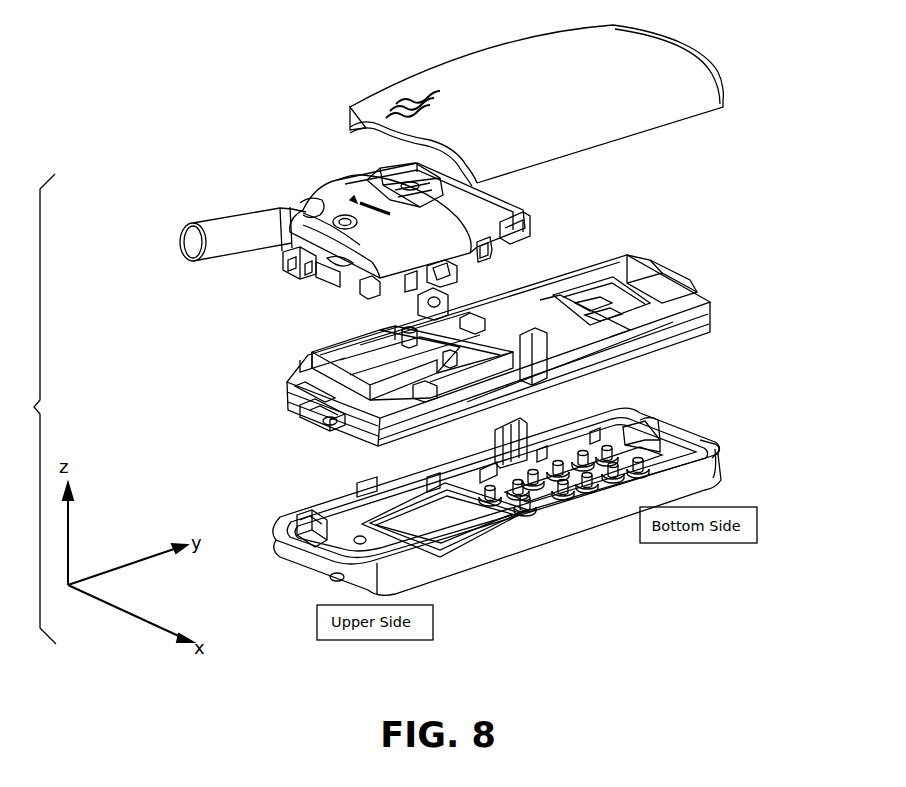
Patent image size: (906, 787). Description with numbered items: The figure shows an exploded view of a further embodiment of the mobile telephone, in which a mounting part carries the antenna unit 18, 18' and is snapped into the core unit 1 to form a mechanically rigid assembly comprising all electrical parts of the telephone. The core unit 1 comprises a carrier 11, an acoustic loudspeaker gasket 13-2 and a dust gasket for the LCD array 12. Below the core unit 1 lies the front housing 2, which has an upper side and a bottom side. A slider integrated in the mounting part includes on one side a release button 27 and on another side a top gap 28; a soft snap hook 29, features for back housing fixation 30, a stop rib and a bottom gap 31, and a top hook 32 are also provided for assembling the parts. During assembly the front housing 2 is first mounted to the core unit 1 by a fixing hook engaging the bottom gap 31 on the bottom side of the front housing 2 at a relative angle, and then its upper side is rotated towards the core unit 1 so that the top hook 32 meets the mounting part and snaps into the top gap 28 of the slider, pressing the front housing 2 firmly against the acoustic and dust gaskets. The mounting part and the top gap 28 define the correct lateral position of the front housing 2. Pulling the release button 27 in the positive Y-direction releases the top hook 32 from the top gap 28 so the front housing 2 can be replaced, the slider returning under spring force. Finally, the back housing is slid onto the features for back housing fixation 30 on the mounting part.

The core unit 1 is at (668, 66).
The front housing 2 is at (570, 527).
The carrier 11 is at (321, 436).
The LCD array 12 is at (313, 436).
The acoustic gasket 13-2 is at (312, 436).
The antenna unit 18 is at (401, 216).
The antenna unit 18' is at (199, 234).
The release button 27 is at (387, 172).
The top gap 28 is at (310, 274).
The soft snap hook 29 is at (490, 255).
The features for back housing fixation 30 is at (523, 227).
The bottom gap 31 is at (720, 452).
The top hook 32 is at (282, 523).